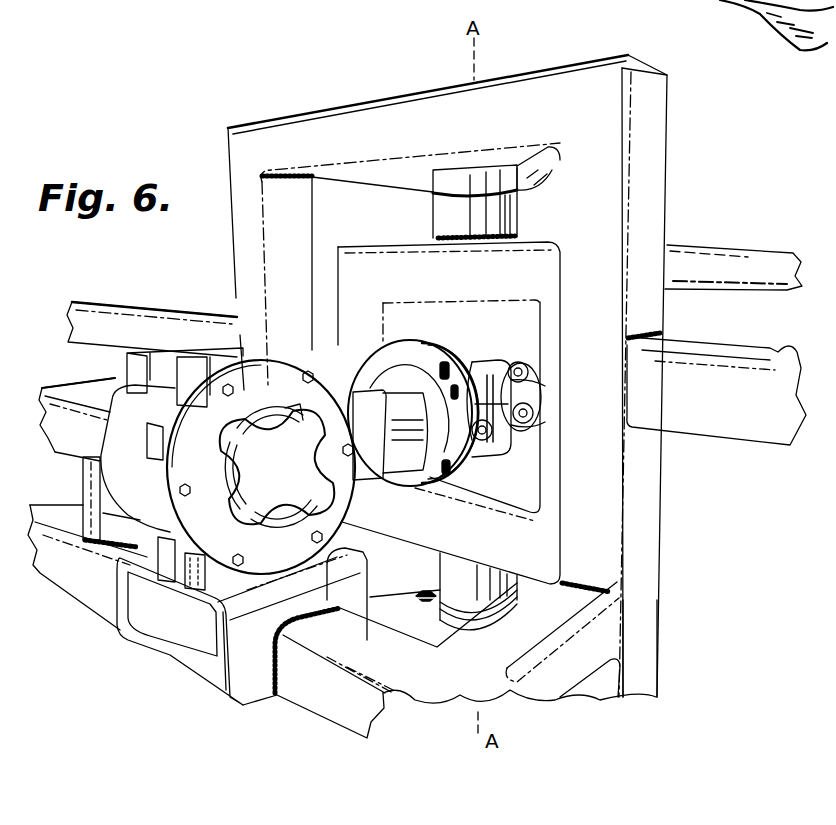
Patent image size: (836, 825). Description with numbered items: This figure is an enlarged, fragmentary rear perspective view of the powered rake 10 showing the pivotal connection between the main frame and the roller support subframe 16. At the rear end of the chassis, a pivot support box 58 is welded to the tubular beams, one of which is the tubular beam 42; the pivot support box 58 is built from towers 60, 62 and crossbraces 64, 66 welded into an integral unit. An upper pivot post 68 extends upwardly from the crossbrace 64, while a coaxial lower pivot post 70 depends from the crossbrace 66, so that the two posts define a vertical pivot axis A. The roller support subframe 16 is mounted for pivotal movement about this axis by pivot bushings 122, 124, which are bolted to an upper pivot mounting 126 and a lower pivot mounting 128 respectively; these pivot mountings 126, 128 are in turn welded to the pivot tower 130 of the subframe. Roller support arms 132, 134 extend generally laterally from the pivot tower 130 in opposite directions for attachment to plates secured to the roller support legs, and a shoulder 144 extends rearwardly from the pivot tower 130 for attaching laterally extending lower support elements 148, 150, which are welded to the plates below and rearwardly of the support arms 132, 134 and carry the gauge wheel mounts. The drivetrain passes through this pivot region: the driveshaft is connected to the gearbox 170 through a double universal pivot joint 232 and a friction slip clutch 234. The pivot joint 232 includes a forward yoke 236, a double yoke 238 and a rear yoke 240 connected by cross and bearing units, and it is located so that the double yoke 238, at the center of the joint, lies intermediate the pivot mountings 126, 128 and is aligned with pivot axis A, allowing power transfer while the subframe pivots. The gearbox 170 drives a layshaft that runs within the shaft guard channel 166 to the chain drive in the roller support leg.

The powered rake 10 is at (225, 126).
The roller support subframe 16 is at (670, 105).
The tubular beam 42 is at (694, 256).
The pivot support box 58 is at (389, 237).
The tower 60 is at (410, 327).
The tower 62 is at (550, 344).
The crossbrace 64 is at (398, 257).
The crossbrace 66 is at (413, 538).
The upper pivot post 68 is at (504, 220).
The lower pivot post 70 is at (455, 574).
The pivot bushing 122 is at (457, 177).
The pivot bushing 124 is at (470, 603).
The upper pivot mounting 126 is at (528, 186).
The lower pivot mounting 128 is at (420, 625).
The pivot tower 130 is at (655, 140).
The roller support arm 132 is at (714, 350).
The roller support arm 134 is at (161, 307).
The shoulder 144 is at (600, 697).
The lower support element 148 is at (540, 698).
The lower support element 150 is at (63, 513).
The shaft guard channel 166 is at (110, 380).
The gearbox 170 is at (184, 360).
The double universal pivot joint 232 is at (476, 354).
The friction slip clutch 234 is at (405, 470).
The forward yoke 236 is at (540, 404).
The double yoke 238 is at (508, 440).
The rear yoke 240 is at (480, 443).